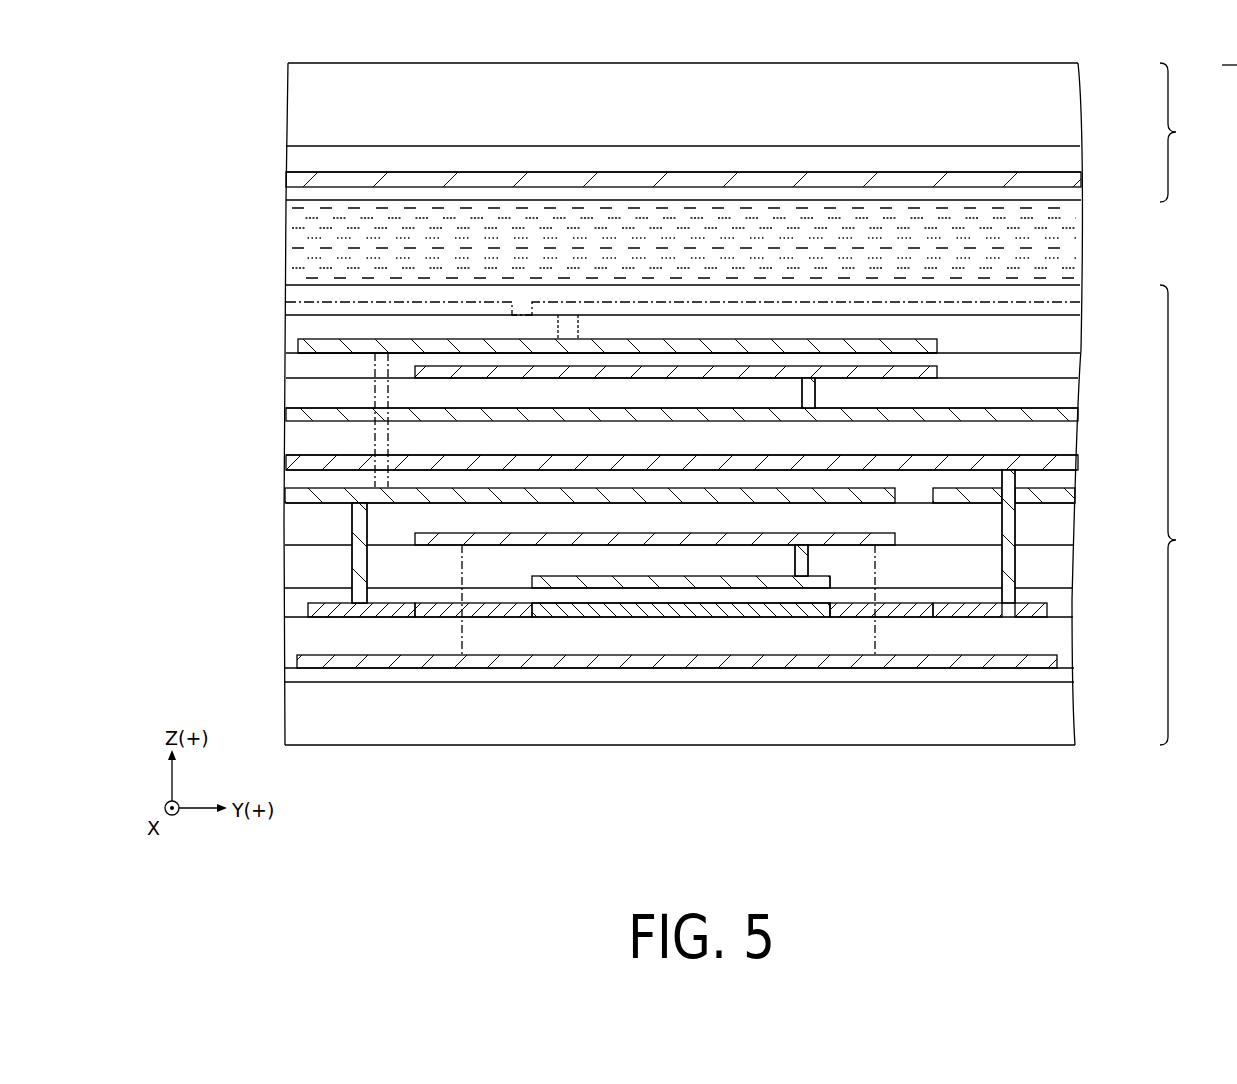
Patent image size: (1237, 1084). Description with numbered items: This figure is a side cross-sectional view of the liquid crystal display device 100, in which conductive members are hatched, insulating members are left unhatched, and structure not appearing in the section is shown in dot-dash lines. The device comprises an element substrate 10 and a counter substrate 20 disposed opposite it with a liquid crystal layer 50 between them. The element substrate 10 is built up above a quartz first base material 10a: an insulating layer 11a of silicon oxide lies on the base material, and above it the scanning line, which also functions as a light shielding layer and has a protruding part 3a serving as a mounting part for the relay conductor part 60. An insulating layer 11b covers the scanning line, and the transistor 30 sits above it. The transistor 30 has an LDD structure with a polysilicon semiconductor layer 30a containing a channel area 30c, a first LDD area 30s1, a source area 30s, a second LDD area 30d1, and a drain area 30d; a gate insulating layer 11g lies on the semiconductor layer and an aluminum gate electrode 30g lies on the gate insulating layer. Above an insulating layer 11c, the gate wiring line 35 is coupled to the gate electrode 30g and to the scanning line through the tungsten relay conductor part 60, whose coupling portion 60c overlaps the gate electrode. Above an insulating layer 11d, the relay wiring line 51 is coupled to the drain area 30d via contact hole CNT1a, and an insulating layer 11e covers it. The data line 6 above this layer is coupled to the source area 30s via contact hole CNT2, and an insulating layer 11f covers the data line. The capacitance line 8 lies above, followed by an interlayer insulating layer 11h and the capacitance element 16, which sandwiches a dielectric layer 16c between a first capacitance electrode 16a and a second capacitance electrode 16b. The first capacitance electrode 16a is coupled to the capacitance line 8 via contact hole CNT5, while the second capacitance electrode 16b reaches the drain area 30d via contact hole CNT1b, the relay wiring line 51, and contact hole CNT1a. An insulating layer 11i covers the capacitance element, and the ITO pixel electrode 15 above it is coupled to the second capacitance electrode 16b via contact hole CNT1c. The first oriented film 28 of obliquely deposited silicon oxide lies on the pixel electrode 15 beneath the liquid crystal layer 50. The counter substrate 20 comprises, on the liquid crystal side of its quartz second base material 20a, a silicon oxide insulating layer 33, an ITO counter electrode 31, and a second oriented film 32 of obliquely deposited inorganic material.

The liquid crystal display device 100 is at (1236, 77).
The counter substrate 20 is at (1185, 132).
The second base material 20a is at (1072, 98).
The insulating layer 33 is at (1073, 155).
The counter electrode 31 is at (1073, 180).
The second oriented film 32 is at (1073, 194).
The liquid crystal layer 50 is at (1073, 233).
The first oriented film 28 is at (1073, 292).
The pixel electrode 15 is at (298, 308).
The insulating layer 11i is at (1073, 343).
The capacitance element 16 is at (773, 110).
The first capacitance electrode 16a is at (757, 372).
The second capacitance electrode 16b is at (633, 347).
The dielectric layer 16c is at (713, 372).
The insulating layer 11h is at (1073, 393).
The capacitance line 8 is at (598, 408).
The insulating layer 11f is at (1073, 440).
The data line 6 is at (680, 446).
The insulating layer 11e is at (1073, 478).
The relay wiring line 51 is at (467, 494).
The insulating layer 11d is at (1073, 522).
The gate wiring line 35 is at (680, 529).
The insulating layer 11c is at (1073, 568).
The relay conductor part 60 is at (853, 569).
The coupling portion 60c is at (795, 561).
The gate insulating layer 11g is at (1073, 595).
The transistor 30 is at (1018, 792).
The semiconductor layer 30a is at (1049, 608).
The drain area 30d is at (390, 617).
The second LDD area 30d1 is at (483, 617).
The channel area 30c is at (630, 617).
The gate electrode 30g is at (692, 617).
The first LDD area 30s1 is at (851, 617).
The source area 30s is at (990, 617).
The insulating layer 11b is at (1073, 640).
The protruding part 3a is at (1058, 660).
The insulating layer 11a is at (1073, 678).
The first base material 10a is at (1073, 713).
The element substrate 10 is at (1185, 515).
The contact hole CNT1a is at (352, 520).
The contact hole CNT1b is at (380, 388).
The contact hole CNT1c is at (568, 329).
The contact hole CNT2 is at (1000, 521).
The contact hole CNT5 is at (815, 390).